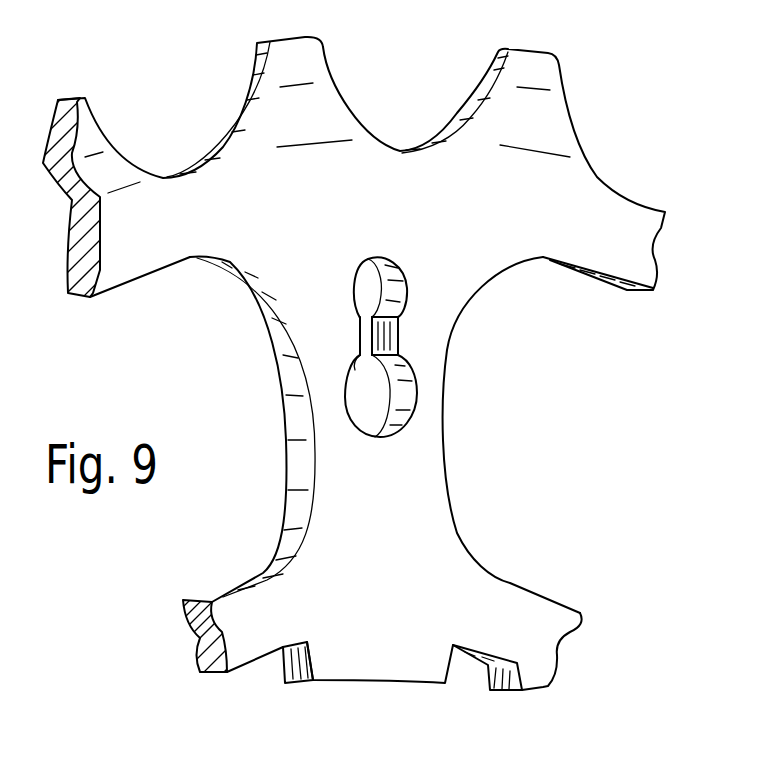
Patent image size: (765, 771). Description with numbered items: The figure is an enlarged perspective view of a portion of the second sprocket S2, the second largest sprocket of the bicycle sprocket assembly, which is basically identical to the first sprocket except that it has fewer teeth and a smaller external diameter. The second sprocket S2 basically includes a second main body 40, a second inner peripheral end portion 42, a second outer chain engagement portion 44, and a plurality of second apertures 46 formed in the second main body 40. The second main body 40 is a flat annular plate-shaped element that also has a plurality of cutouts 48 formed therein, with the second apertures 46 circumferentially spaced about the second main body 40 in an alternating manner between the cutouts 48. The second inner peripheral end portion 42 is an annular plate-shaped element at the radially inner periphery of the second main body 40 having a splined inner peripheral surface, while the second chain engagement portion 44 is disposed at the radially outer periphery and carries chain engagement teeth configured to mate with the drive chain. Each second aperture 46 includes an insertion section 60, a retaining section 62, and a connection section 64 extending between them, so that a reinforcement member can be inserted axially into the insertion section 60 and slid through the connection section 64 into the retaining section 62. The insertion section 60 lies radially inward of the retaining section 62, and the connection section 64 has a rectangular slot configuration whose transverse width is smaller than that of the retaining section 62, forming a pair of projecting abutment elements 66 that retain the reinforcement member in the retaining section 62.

The second sprocket S2 is at (603, 118).
The second main body 40 is at (430, 481).
The second inner peripheral end portion 42 is at (503, 636).
The second outer chain engagement portion 44 is at (325, 108).
The second aperture 46 is at (543, 305).
The cutout 48 is at (456, 514).
The insertion section 60 is at (396, 405).
The retaining section 62 is at (391, 293).
The connection section 64 is at (391, 343).
The projecting abutment element 66 is at (390, 393).